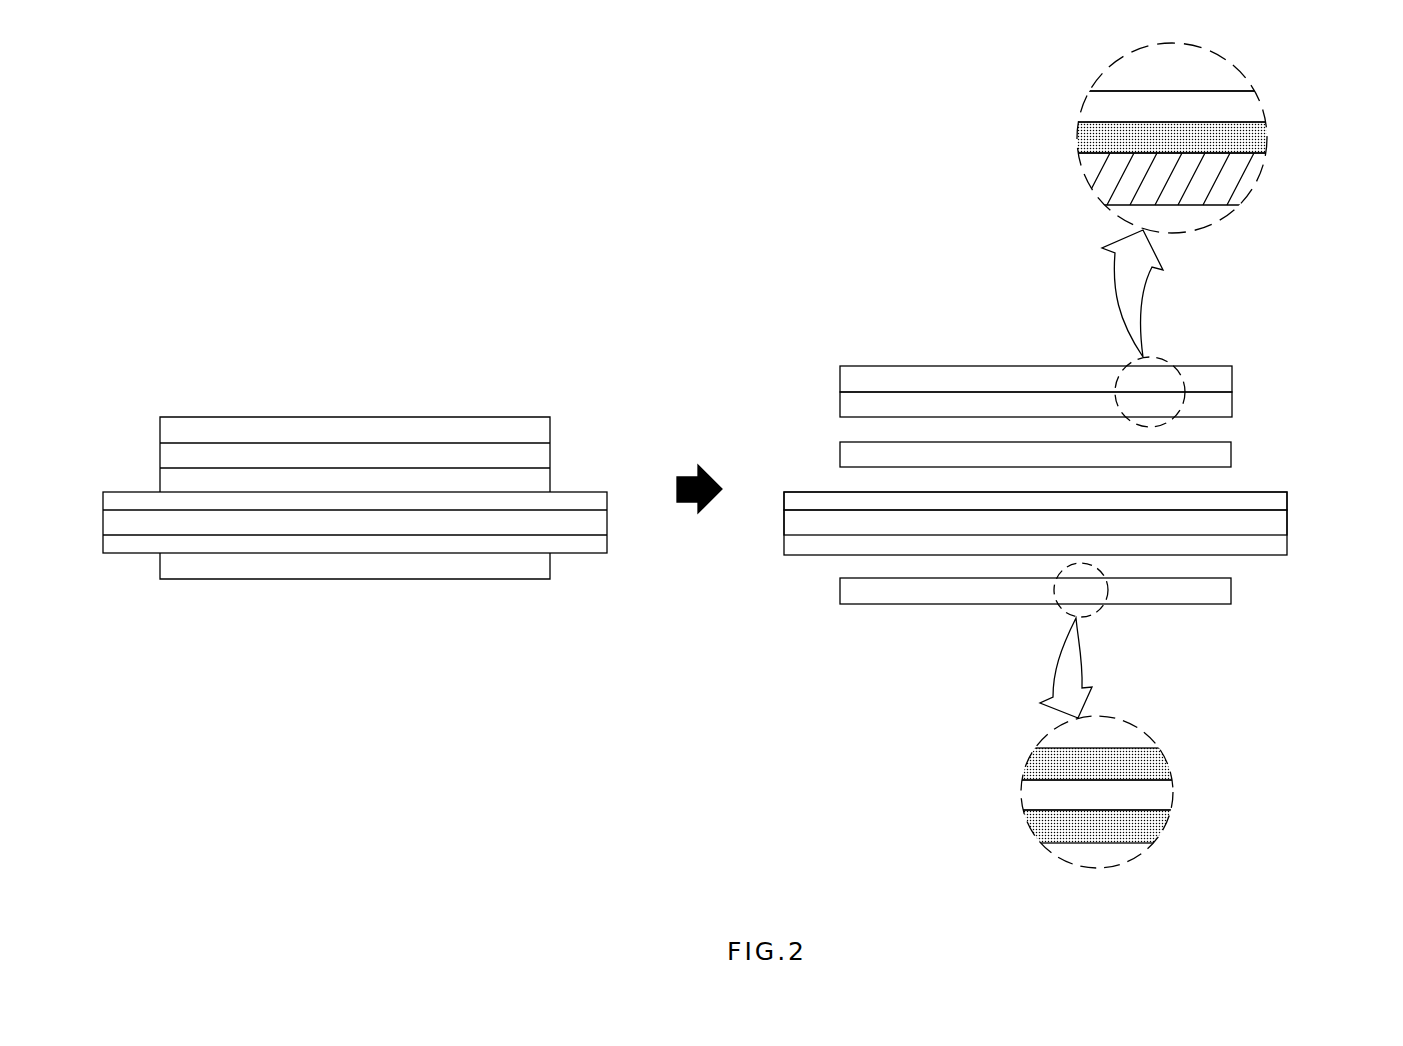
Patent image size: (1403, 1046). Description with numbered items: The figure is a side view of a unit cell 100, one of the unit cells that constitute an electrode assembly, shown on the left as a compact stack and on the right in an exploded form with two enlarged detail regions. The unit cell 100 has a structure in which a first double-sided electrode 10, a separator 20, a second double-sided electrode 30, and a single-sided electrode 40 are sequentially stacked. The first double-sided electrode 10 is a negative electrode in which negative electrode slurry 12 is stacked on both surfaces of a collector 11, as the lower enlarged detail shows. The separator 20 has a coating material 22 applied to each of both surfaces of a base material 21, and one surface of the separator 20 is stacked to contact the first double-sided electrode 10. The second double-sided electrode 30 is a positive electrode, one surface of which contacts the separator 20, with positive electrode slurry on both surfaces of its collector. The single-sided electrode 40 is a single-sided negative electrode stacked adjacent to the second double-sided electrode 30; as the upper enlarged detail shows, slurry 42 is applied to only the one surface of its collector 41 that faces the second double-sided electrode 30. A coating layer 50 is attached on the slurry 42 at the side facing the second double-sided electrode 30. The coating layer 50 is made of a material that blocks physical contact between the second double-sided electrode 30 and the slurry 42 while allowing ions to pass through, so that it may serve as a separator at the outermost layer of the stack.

The unit cell 100 is at (812, 278).
The first double-sided electrode 10 is at (1222, 590).
The collector 11 is at (1162, 800).
The negative electrode slurry 12 is at (1162, 763).
The separator 20 is at (1355, 491).
The base material 21 is at (1278, 525).
The coating material 22 is at (1278, 500).
The second double-sided electrode 30 is at (1222, 455).
The single-sided electrode 40 is at (1224, 378).
The collector 41 is at (1254, 106).
The slurry 42 is at (1254, 139).
The coating layer 50 is at (1224, 405).